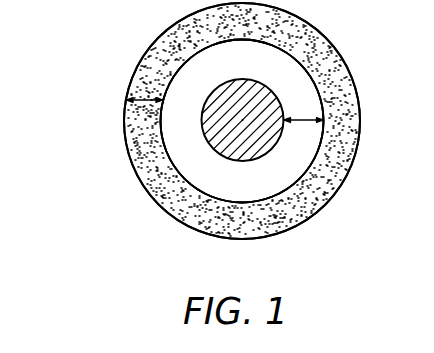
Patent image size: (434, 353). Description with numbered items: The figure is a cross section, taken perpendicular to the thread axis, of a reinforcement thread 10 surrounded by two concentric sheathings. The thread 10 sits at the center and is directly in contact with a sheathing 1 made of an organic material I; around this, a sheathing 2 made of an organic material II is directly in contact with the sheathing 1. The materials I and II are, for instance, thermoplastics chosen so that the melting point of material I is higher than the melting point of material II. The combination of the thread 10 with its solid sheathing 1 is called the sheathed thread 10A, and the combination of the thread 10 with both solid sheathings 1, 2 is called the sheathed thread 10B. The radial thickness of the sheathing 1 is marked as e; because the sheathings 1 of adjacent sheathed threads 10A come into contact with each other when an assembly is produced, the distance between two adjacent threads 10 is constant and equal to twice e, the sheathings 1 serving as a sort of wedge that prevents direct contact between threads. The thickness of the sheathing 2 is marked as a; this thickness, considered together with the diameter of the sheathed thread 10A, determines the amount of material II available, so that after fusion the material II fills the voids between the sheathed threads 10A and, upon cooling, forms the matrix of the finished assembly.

The reinforcement thread 10 is at (262, 80).
The sheathing 1 is at (313, 92).
The sheathing 2 is at (347, 182).
The sheathed thread 10A is at (182, 183).
The sheathed thread 10B is at (112, 164).
The organic material I is at (287, 180).
The organic material II is at (352, 134).
The thickness of the sheathing 2 a is at (144, 92).
The thickness of the sheathing 1 e is at (304, 111).